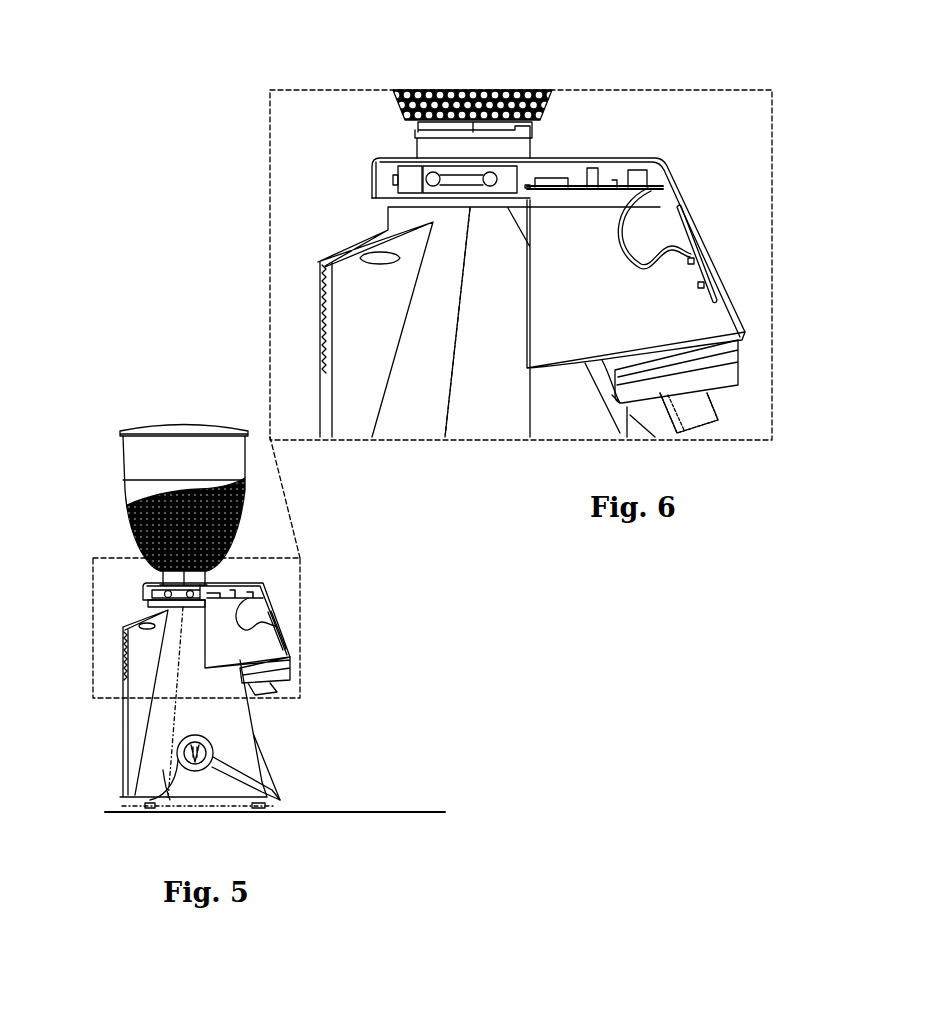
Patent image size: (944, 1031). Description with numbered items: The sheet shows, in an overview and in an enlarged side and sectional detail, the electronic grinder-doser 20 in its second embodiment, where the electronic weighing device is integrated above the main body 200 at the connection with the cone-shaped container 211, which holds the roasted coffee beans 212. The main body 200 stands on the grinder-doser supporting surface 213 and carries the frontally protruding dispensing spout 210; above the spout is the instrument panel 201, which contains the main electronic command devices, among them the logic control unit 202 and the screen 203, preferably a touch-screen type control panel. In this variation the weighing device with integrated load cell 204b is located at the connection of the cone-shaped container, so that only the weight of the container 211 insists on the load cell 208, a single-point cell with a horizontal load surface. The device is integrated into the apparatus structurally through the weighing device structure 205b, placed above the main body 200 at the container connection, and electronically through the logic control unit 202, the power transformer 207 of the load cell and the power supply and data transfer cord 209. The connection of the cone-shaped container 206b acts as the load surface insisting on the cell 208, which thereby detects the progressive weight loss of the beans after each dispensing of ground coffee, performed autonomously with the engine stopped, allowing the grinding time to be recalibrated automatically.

In FIG. 5, the electronic grinder-doser 20 is at (130, 400).
In FIG. 5, the main body 200 is at (172, 738).
In FIG. 6, the instrument panel 201 is at (738, 385).
In FIG. 5, the instrument panel 201 is at (320, 609).
In FIG. 6, the logic control unit 202 is at (705, 262).
In FIG. 6, the screen 203 is at (727, 290).
In FIG. 6, the weighing device with load cell integrated at the container connection 204b is at (362, 168).
In FIG. 5, the weighing device with load cell integrated at the container connection 204b is at (128, 593).
In FIG. 6, the weighing device structure integrated above the main body 205b is at (390, 182).
In FIG. 6, the connection of the cone-shaped container 206b is at (486, 158).
In FIG. 6, the power transformer 207 is at (655, 157).
In FIG. 6, the load cell 208 is at (377, 160).
In FIG. 6, the power supply cord and data transfer 209 is at (623, 233).
In FIG. 6, the dispensing spout 210 is at (722, 415).
In FIG. 5, the cone-shaped container 211 is at (190, 467).
In FIG. 5, the coffee beans 212 is at (128, 519).
In FIG. 5, the grinder-doser supporting surface 213 is at (427, 808).